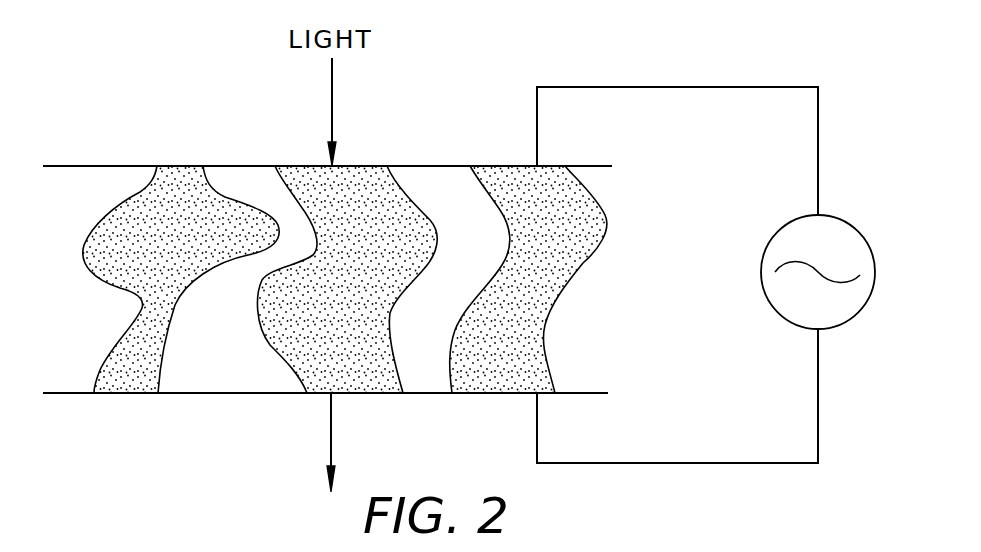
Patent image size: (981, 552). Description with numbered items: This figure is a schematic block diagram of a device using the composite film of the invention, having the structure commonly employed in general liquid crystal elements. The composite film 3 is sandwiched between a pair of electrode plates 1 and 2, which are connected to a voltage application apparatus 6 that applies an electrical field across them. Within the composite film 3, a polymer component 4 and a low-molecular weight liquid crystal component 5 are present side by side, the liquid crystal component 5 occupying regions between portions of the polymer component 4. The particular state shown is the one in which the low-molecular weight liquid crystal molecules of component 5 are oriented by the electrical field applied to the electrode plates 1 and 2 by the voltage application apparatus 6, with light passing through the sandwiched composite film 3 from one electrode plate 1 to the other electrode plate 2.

The electrode plate 1 is at (582, 165).
The electrode plate 2 is at (585, 393).
The composite film 3 is at (547, 323).
The polymer component 4 is at (452, 195).
The low-molecular weight liquid crystal component 5 is at (572, 210).
The voltage application apparatus 6 is at (875, 260).